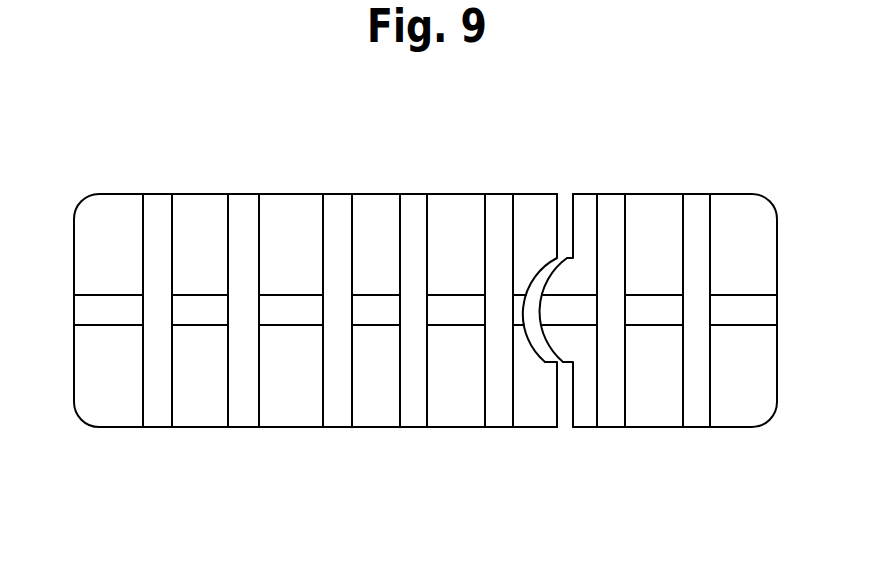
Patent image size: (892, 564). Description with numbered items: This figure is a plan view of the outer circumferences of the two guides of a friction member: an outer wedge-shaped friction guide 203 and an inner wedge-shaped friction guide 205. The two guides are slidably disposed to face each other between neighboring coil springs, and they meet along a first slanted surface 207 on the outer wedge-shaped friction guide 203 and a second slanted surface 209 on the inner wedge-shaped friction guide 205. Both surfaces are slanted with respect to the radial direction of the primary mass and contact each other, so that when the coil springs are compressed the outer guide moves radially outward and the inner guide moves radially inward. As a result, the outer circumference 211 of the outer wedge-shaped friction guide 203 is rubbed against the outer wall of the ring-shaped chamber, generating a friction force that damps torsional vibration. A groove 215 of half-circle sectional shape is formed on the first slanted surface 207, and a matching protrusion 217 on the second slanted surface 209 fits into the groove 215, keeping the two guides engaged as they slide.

The outer wedge-shaped friction guide 203 is at (319, 300).
The inner wedge-shaped friction guide 205 is at (658, 301).
The first slanted surface 207 is at (563, 200).
The second slanted surface 209 is at (572, 200).
The outer circumference 211 is at (456, 194).
The groove 215 is at (536, 344).
The protrusion 217 is at (558, 342).